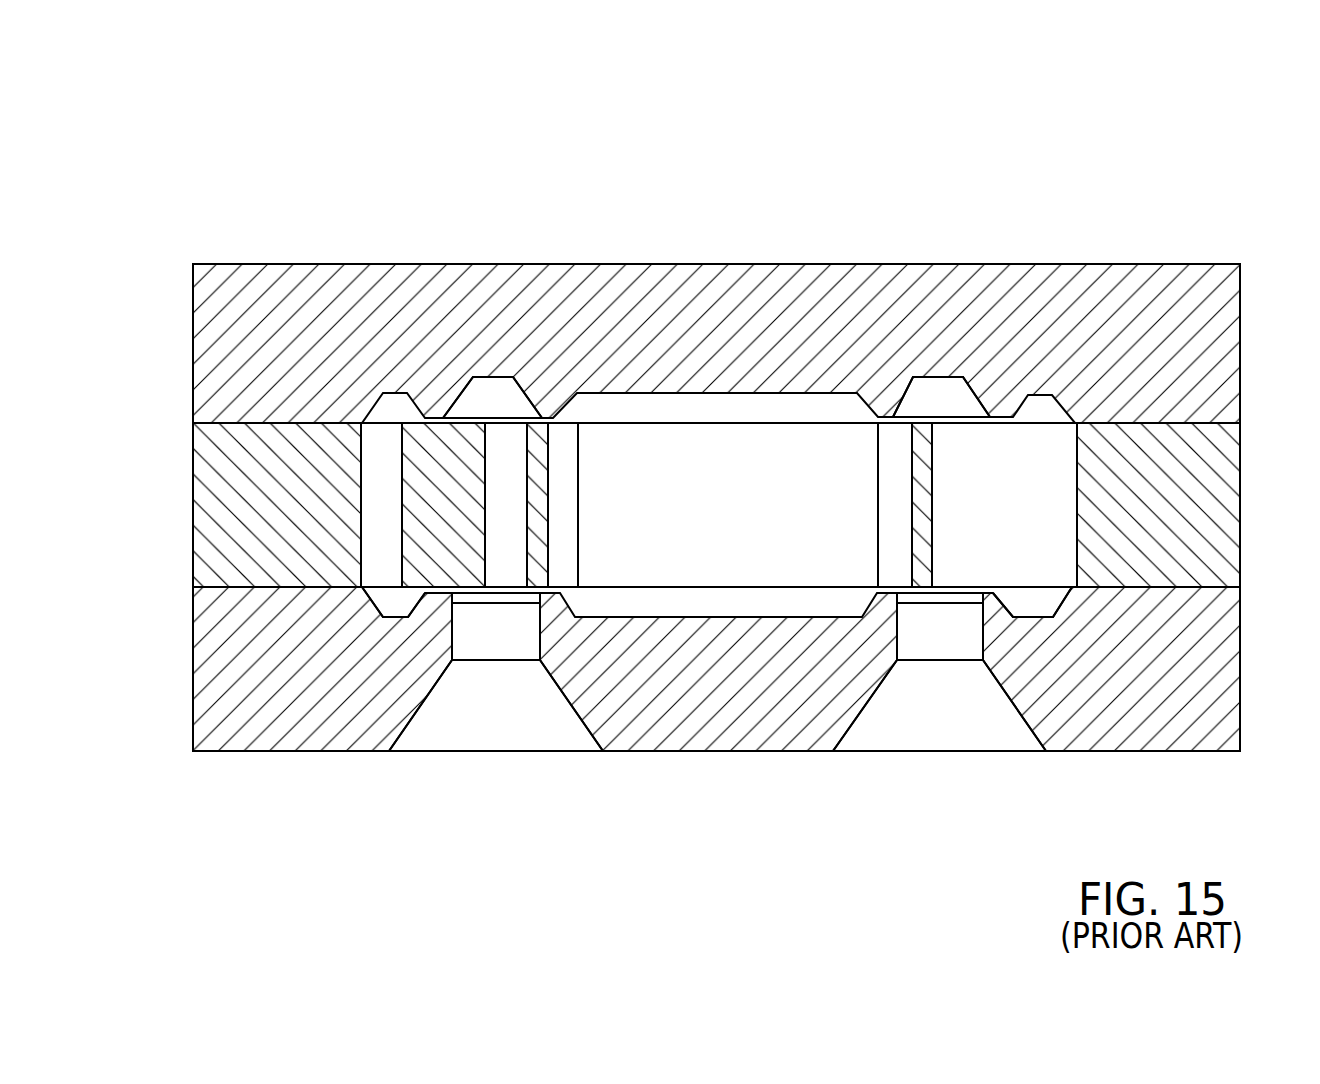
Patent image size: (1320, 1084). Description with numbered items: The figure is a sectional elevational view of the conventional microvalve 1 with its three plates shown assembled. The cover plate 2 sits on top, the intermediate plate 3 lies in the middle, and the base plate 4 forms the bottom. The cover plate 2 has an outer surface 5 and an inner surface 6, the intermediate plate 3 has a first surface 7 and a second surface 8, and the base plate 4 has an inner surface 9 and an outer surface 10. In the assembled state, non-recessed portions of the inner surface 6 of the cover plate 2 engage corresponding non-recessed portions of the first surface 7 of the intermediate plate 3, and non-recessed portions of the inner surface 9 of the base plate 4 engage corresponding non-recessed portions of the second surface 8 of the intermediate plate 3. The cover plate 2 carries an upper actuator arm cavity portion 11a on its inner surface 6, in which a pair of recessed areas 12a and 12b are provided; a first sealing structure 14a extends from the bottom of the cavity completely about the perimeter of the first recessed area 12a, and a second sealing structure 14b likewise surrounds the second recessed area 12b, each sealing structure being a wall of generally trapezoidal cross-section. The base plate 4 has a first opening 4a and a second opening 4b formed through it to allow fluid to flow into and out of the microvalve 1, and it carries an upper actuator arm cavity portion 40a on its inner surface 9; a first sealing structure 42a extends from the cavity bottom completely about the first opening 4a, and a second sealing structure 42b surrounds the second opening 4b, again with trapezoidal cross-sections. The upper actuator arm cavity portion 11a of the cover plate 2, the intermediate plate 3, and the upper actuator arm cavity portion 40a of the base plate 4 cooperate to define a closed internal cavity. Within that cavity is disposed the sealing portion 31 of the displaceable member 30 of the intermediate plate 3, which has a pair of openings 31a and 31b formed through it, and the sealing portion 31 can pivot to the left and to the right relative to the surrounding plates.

The microvalve 1 is at (1022, 137).
The cover plate 2 is at (1175, 288).
The intermediate plate 3 is at (710, 505).
The base plate 4 is at (670, 727).
The first opening 4a is at (540, 632).
The second opening 4b is at (983, 632).
The outer surface 5 is at (252, 263).
The inner surface 6 is at (1215, 428).
The first surface 7 is at (213, 423).
The second surface 8 is at (213, 588).
The inner surface 9 is at (1215, 585).
The outer surface 10 is at (213, 752).
The upper actuator arm cavity portion 11a is at (622, 393).
The first recessed area 12a is at (930, 378).
The second recessed area 12b is at (500, 397).
The first sealing structure 14a is at (983, 378).
The second sealing structure 14b is at (460, 397).
The displaceable member 30 is at (791, 423).
The sealing portion 31 is at (418, 532).
The opening 31a is at (528, 506).
The opening 31b is at (932, 505).
The upper actuator arm cavity portion 40a is at (720, 617).
The first sealing structure 42a is at (419, 606).
The second sealing structure 42b is at (1018, 610).